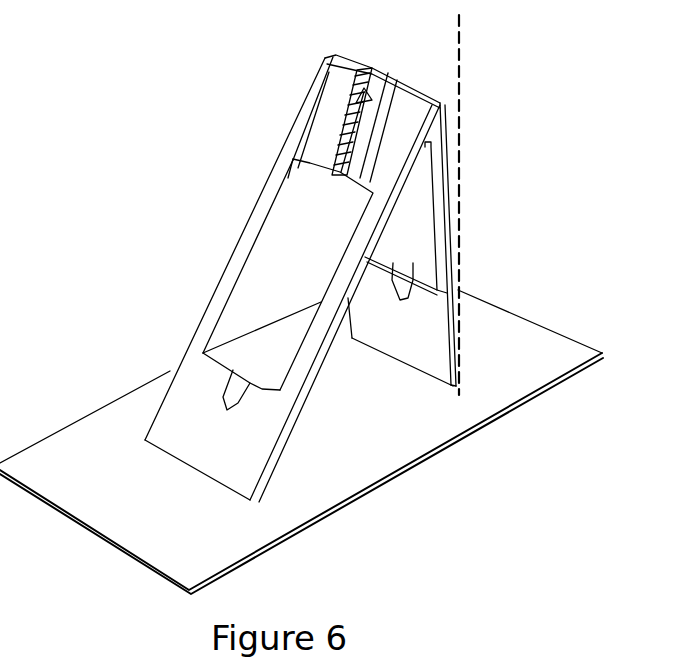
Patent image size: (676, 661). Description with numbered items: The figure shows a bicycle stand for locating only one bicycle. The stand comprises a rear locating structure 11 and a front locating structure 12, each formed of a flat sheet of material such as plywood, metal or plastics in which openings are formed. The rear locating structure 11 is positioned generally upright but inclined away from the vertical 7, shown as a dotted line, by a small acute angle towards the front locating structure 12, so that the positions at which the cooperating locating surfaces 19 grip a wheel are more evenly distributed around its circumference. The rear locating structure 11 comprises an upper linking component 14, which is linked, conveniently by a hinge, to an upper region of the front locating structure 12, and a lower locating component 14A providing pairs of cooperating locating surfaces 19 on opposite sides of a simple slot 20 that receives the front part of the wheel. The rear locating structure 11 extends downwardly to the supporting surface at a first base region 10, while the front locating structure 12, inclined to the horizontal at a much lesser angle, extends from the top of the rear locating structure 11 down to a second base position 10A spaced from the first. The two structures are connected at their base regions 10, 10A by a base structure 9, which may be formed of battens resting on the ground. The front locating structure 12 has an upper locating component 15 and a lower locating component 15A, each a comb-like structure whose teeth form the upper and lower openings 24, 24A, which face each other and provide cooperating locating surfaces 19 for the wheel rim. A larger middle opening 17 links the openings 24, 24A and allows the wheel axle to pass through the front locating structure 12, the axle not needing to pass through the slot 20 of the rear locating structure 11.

The vertical 7 is at (462, 48).
The base structure 9 is at (405, 476).
The first base region 10 is at (456, 386).
The second base position 10A is at (250, 503).
The rear locating structure 11 is at (449, 195).
The front locating structure 12 is at (221, 275).
The upper linking component 14 is at (433, 147).
The lower locating component 14A is at (424, 348).
The upper locating component 15 is at (300, 137).
The lower locating component 15A is at (190, 372).
The middle opening 17 is at (285, 238).
The cooperating locating surfaces 19 is at (352, 150).
The slot 20 is at (420, 245).
The upper opening 24 is at (280, 175).
The lower opening 24A is at (248, 408).